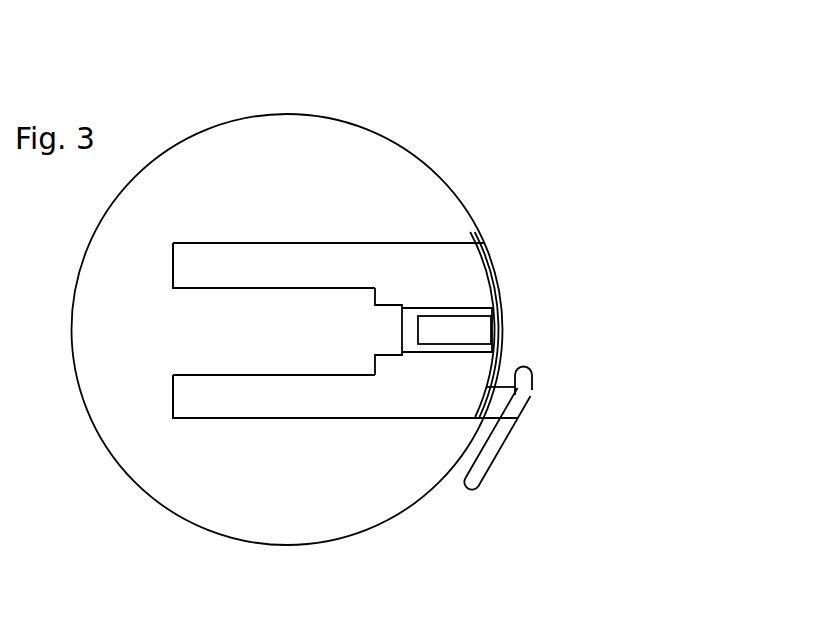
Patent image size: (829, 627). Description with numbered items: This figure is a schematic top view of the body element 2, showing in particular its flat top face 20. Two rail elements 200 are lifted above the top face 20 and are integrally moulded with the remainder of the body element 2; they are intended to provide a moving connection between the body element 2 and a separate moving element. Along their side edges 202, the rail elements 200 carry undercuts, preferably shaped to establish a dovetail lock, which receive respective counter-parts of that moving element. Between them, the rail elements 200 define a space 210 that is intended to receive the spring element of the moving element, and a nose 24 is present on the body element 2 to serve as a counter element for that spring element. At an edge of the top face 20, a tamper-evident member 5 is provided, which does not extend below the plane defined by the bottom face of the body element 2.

The body element 2 is at (195, 480).
The top face 20 is at (405, 176).
The rail elements 200 is at (335, 258).
The side edges 202 is at (300, 243).
The space 210 is at (352, 330).
The nose 24 is at (413, 332).
The tamper-evident member 5 is at (507, 320).